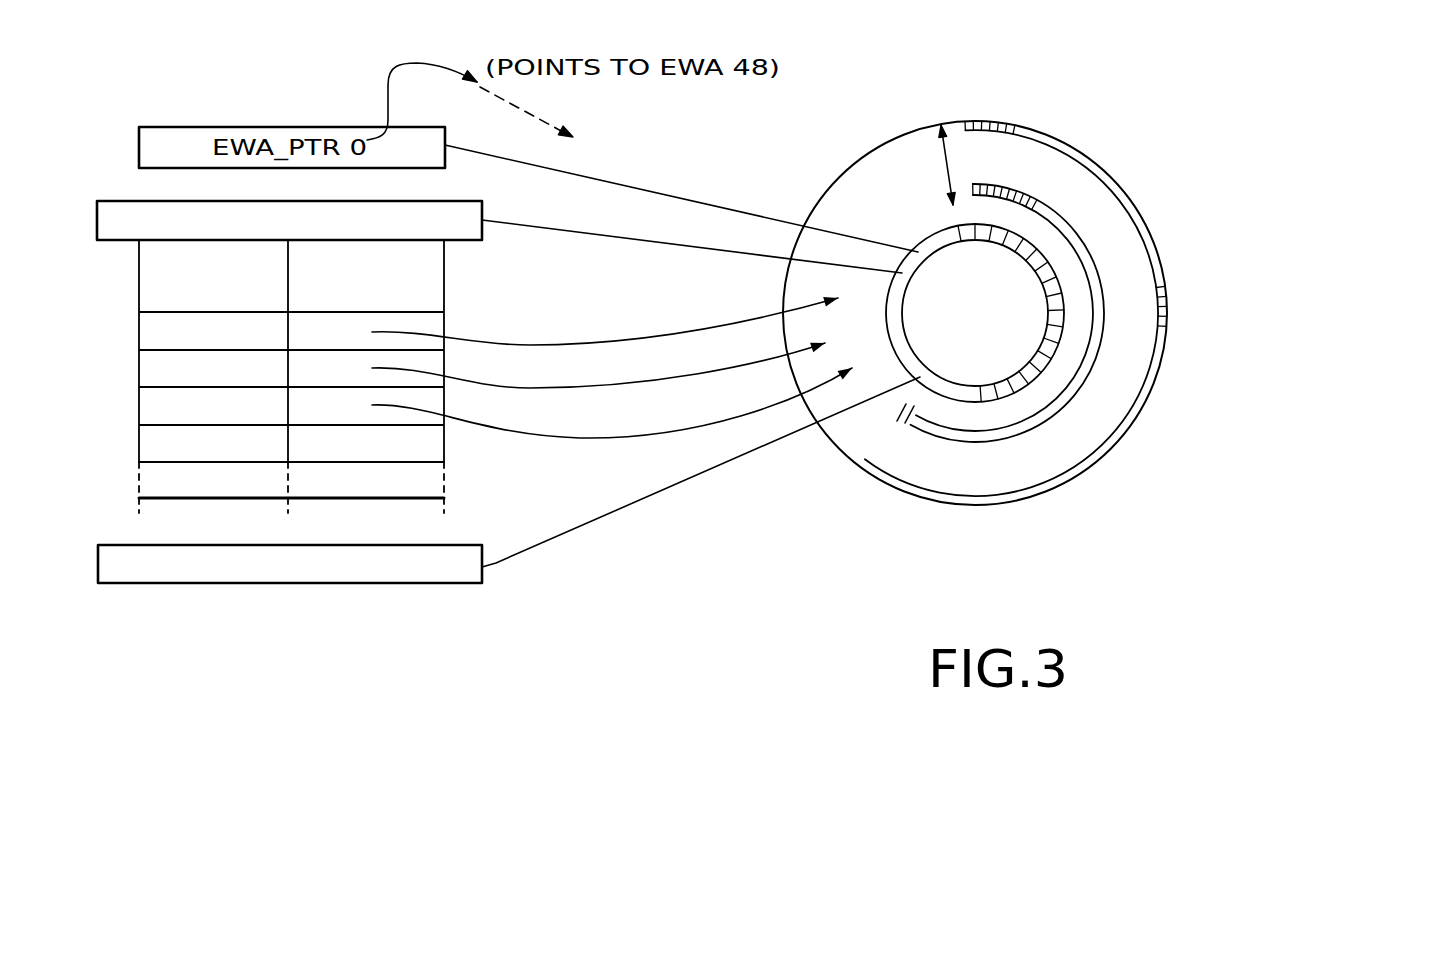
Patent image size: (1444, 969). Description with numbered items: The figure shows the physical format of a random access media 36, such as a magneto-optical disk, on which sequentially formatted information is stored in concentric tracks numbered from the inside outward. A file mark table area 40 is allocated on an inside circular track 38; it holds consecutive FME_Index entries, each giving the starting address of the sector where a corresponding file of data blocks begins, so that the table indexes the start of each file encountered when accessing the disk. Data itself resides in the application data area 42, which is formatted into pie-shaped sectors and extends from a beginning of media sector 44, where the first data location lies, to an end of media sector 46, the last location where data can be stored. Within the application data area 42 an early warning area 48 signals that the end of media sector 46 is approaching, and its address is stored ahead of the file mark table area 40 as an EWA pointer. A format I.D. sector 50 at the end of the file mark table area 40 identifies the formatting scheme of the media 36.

The random access media 36 is at (975, 515).
The inside circular track 38 is at (955, 382).
The file mark table area 40 is at (499, 357).
The application data area 42 is at (936, 167).
The beginning of media sector 44 is at (1010, 185).
The end of media sector 46 is at (996, 123).
The early warning area 48 is at (1168, 311).
The format I.D. sector 50 is at (509, 480).